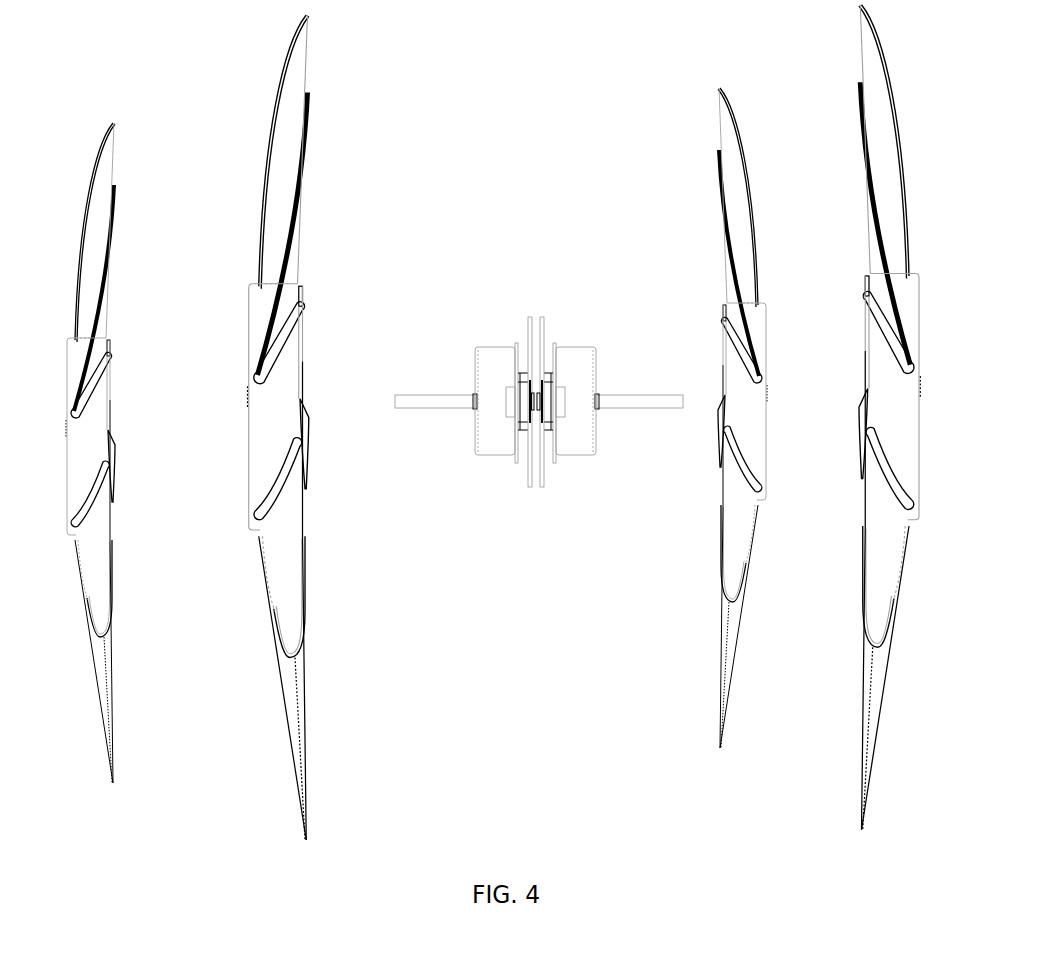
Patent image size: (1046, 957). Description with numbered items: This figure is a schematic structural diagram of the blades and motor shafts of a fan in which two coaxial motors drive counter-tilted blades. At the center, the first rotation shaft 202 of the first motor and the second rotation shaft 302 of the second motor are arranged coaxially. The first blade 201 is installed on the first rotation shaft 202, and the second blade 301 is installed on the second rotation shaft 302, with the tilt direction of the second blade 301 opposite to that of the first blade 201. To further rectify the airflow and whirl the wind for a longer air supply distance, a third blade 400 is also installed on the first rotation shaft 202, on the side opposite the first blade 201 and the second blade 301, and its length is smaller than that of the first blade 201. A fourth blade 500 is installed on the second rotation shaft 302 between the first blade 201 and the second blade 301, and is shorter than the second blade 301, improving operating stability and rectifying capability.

The third blade 400 is at (108, 695).
The first blade 201 is at (302, 767).
The fourth blade 500 is at (728, 685).
The second blade 301 is at (875, 738).
The first rotation shaft 202 is at (458, 397).
The second rotation shaft 302 is at (613, 395).